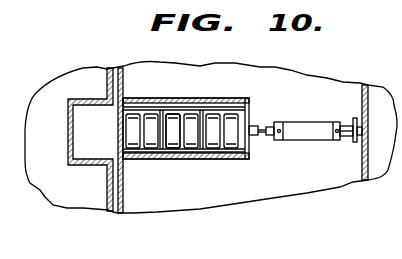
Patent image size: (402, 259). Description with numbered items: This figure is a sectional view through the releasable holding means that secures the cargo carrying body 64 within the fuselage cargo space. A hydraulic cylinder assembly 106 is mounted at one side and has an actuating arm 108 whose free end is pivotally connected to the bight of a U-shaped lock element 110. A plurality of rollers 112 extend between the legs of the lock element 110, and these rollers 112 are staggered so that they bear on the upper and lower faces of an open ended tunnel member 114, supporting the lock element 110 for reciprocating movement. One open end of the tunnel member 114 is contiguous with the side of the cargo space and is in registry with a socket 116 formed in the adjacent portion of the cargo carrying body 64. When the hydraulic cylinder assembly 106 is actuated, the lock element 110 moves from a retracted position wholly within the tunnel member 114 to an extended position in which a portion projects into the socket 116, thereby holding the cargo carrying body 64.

The cargo carrying body 64 is at (47, 258).
The hydraulic cylinder assembly 106 is at (312, 125).
The actuating arm 108 is at (259, 124).
The lock element 110 is at (206, 112).
The rollers 112 is at (170, 118).
The tunnel member 114 is at (198, 163).
The socket 116 is at (86, 110).